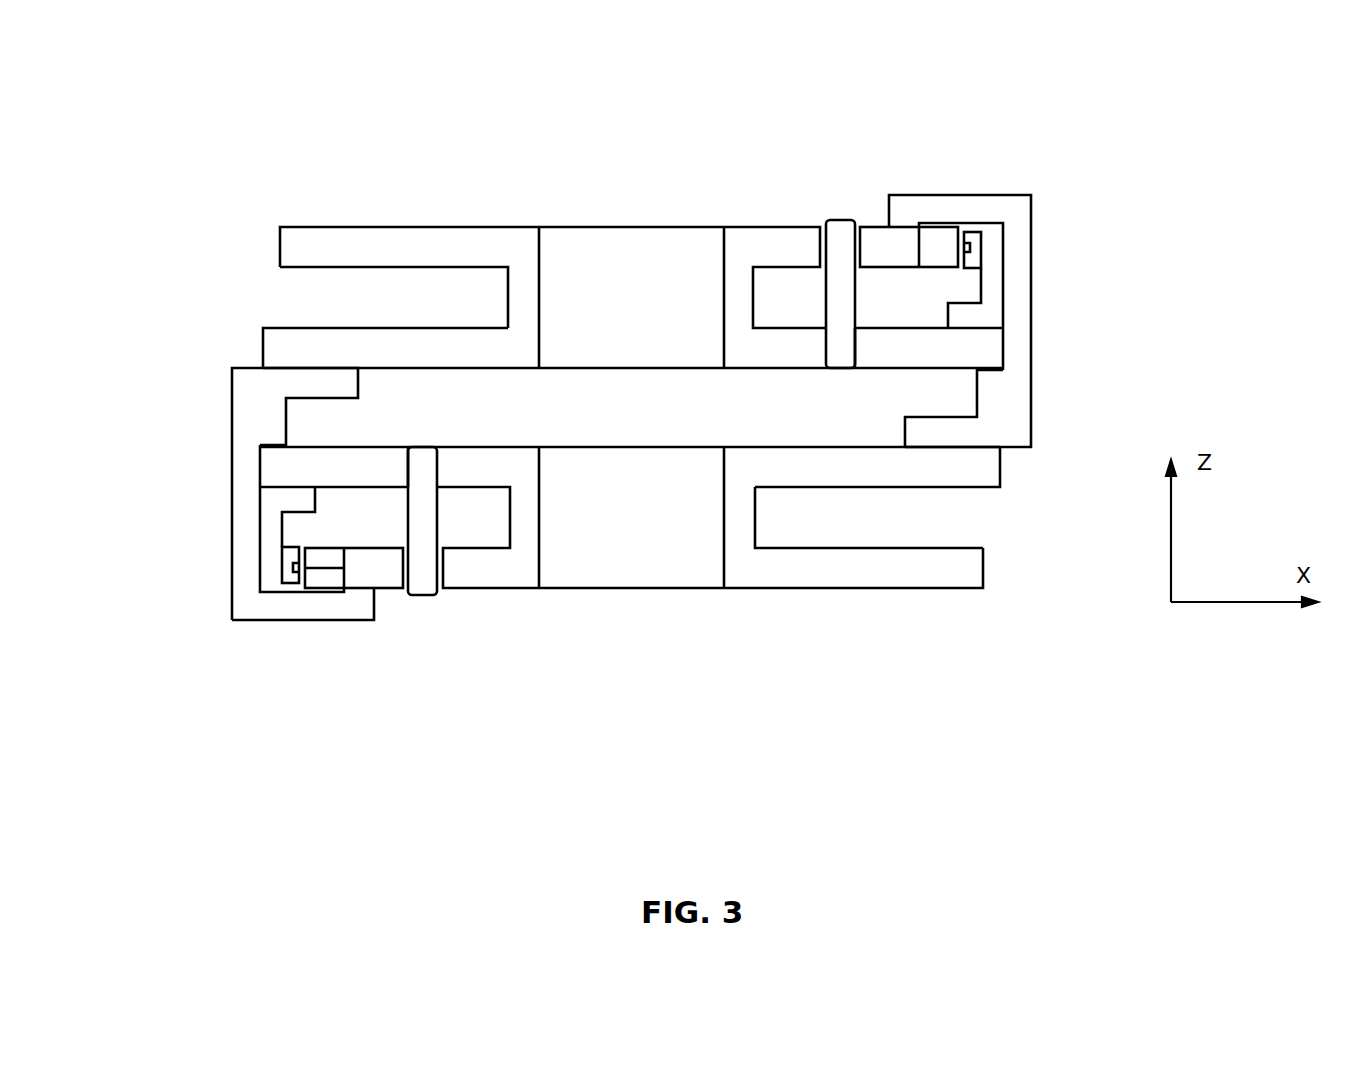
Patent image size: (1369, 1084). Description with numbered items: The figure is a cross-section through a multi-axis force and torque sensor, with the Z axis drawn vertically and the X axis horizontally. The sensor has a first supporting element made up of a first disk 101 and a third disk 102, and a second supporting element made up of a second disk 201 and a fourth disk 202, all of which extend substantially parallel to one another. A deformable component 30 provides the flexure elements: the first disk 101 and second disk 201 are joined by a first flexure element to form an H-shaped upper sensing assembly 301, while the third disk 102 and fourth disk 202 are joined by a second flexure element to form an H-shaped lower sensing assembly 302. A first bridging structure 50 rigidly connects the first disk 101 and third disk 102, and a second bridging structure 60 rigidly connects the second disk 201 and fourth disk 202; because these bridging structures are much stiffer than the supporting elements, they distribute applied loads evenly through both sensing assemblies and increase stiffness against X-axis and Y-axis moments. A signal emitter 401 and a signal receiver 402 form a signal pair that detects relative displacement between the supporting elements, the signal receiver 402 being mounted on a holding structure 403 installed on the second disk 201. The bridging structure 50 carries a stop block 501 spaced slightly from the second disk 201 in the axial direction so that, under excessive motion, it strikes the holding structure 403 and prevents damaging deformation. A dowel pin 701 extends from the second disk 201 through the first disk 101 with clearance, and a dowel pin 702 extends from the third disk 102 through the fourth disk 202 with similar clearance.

The deformable component 30 is at (523, 295).
The first bridging structure 50 is at (1018, 365).
The second bridging structure 60 is at (240, 432).
The first disk 101 is at (413, 245).
The third disk 102 is at (848, 470).
The second disk 201 is at (302, 333).
The fourth disk 202 is at (810, 567).
The upper sensing assembly 301 is at (652, 289).
The lower sensing assembly 302 is at (617, 596).
The signal emitter 401 is at (940, 243).
The signal receiver 402 is at (975, 240).
The holding structure 403 is at (995, 313).
The stop block 501 is at (992, 393).
The dowel pin 701 is at (829, 220).
The dowel pin 702 is at (420, 597).